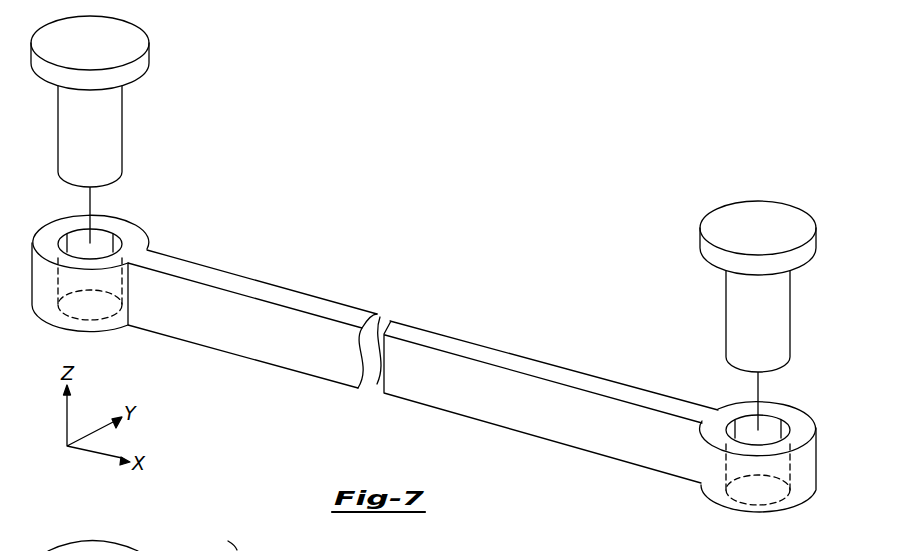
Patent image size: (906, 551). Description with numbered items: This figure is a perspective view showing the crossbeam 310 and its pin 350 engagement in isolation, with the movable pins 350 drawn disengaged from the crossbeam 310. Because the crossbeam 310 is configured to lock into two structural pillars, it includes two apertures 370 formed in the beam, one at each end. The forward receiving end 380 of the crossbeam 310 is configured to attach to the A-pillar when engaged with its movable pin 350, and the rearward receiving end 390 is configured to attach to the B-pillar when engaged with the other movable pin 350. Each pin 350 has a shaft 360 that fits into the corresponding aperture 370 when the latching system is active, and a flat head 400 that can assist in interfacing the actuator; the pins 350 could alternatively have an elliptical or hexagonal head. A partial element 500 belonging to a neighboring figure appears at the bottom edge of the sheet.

The crossbeam 310 is at (303, 301).
The movable pin 350 is at (224, 15).
The shaft 360 is at (107, 137).
The aperture 370 is at (128, 233).
The forward receiving end 380 is at (126, 340).
The rearward receiving end 390 is at (686, 505).
The flat head 400 is at (134, 37).
The element of adjacent figure 500 is at (142, 550).